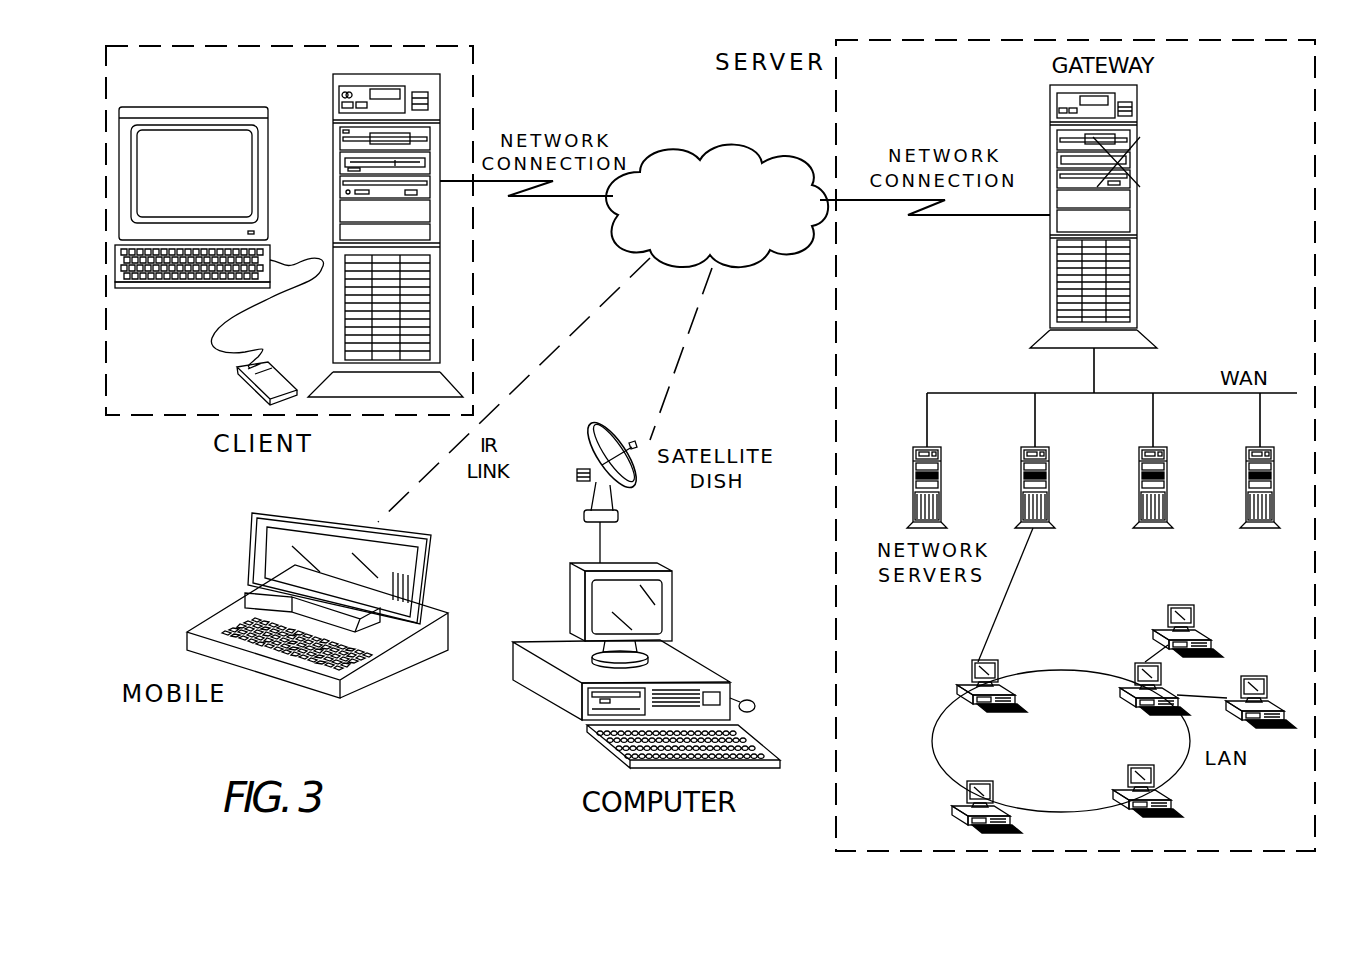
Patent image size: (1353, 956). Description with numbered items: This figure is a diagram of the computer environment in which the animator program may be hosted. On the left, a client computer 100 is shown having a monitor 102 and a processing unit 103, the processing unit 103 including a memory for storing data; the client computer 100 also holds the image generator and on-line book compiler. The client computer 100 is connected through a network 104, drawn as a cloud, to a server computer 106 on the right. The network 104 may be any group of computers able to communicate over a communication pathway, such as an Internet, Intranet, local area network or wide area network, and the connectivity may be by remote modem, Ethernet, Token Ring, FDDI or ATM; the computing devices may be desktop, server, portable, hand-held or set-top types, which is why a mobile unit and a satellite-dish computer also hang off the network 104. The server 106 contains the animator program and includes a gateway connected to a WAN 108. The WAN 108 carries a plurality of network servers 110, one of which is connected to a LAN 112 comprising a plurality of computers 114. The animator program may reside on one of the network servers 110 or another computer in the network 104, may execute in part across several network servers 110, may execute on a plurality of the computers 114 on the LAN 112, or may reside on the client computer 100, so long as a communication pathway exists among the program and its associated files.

The client computer 100 is at (346, 418).
The monitor 102 is at (222, 107).
The processing unit 103 is at (445, 88).
The network 104 is at (740, 147).
The server computer 106 is at (838, 127).
The WAN 108 is at (1283, 393).
The network servers 110 is at (914, 482).
The LAN 112 is at (1098, 719).
The computers 114 is at (967, 684).